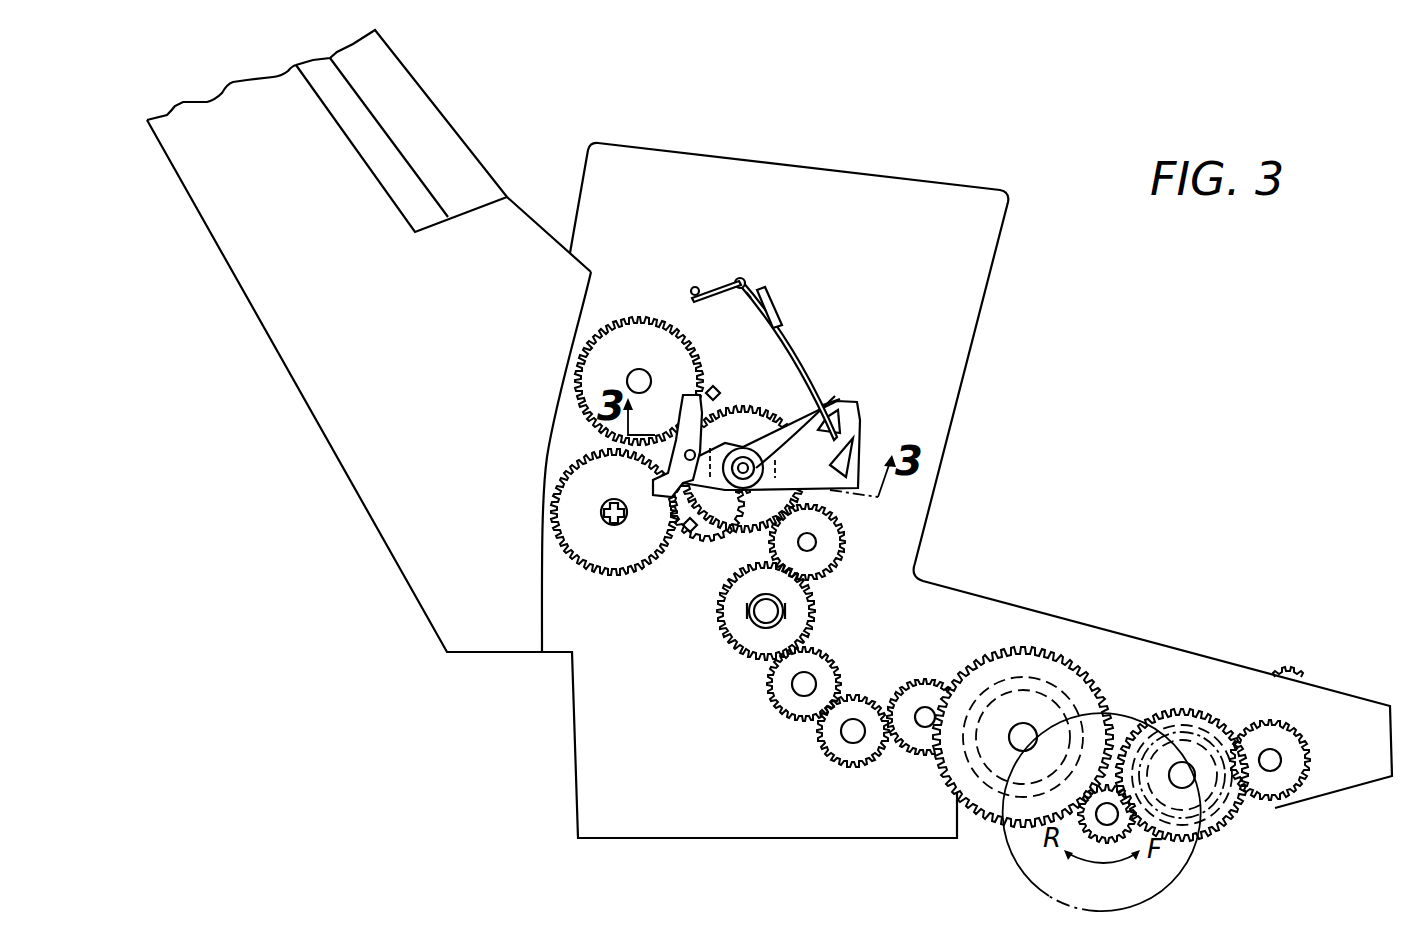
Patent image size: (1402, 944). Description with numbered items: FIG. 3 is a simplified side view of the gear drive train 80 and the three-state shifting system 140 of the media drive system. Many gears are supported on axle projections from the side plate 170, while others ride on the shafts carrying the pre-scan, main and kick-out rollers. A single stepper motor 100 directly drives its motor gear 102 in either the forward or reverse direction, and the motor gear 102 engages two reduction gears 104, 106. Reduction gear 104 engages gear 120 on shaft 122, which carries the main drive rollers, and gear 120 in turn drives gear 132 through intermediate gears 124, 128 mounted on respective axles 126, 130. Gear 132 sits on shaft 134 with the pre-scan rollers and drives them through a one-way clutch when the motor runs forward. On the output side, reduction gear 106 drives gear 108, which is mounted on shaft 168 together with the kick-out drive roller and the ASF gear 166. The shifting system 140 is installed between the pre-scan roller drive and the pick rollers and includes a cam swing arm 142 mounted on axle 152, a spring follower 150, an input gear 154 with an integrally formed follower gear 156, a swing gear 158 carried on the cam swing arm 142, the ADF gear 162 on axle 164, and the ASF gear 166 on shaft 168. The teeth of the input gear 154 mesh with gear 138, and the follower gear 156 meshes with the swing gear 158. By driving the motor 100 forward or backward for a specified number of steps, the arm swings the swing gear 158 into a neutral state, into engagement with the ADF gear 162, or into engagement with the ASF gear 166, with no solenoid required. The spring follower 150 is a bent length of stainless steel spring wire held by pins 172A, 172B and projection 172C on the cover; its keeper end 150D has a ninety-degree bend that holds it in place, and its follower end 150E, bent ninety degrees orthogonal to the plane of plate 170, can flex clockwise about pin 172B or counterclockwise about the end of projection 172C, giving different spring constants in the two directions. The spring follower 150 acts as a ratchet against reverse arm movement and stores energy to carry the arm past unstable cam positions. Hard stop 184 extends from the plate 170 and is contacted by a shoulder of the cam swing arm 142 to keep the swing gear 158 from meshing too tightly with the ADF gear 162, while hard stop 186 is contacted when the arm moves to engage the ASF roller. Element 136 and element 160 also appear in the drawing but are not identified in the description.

The gear drive train 80 is at (781, 749).
The stepper motor 100 is at (1010, 850).
The motor gear 102 is at (1107, 842).
The reduction gear 104 is at (992, 667).
The reduction gear 106 is at (1192, 722).
The gear 108 is at (1283, 782).
The gear 120 is at (917, 748).
The shaft 122 is at (923, 707).
The intermediate gear 124 is at (840, 753).
The axle 126 is at (856, 719).
The intermediate gear 128 is at (777, 706).
The axle 130 is at (792, 683).
The gear 132 is at (737, 628).
The shaft 134 is at (755, 608).
The shaft 136 is at (816, 543).
The gear 138 is at (830, 521).
The three-state shifting system 140 is at (831, 371).
The cam swing arm 142 is at (868, 452).
The spring follower 150 is at (795, 360).
The keeper end 150D is at (731, 272).
The follower end 150E is at (822, 402).
The axle 152 is at (757, 460).
The input gear 154 is at (770, 411).
The follower gear 156 is at (742, 522).
The swing gear 158 is at (655, 477).
The pawl lever 160 is at (688, 450).
The ADF gear 162 is at (632, 322).
The axle 164 is at (640, 369).
The ASF gear 166 is at (563, 541).
The shaft 168 is at (600, 510).
The side plate 170 is at (963, 193).
The pin 172A is at (696, 296).
The pin 172B is at (732, 288).
The projection 172C is at (774, 306).
The hard stop 184 is at (715, 385).
The hard stop 186 is at (683, 527).